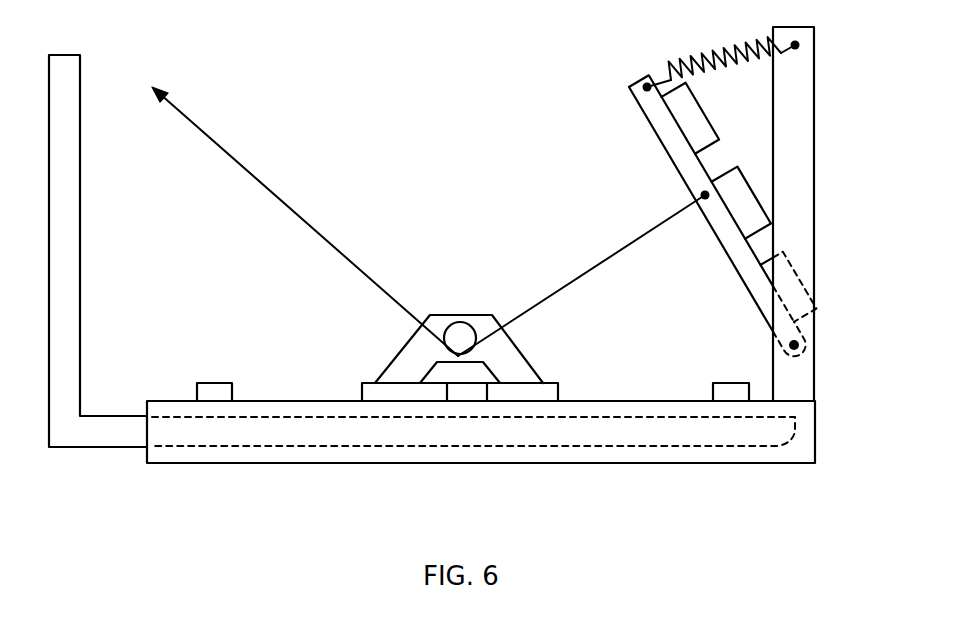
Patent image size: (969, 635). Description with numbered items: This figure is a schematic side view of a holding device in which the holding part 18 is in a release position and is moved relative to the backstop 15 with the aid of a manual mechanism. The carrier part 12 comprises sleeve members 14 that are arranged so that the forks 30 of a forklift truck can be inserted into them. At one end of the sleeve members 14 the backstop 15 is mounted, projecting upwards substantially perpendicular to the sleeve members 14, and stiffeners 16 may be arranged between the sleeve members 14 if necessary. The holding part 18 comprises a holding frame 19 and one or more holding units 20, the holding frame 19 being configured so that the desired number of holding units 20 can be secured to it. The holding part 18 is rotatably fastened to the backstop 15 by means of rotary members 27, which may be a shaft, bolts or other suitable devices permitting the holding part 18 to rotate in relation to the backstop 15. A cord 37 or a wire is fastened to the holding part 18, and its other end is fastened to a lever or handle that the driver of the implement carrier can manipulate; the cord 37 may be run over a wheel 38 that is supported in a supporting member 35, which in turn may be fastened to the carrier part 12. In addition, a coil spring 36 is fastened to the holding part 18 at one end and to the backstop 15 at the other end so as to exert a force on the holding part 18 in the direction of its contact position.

The carrier part 12 is at (479, 264).
The sleeve members 14 is at (782, 464).
The backstop 15 is at (815, 46).
The stiffeners 16 is at (214, 382).
The holding part 18 is at (728, 206).
The holding frame 19 is at (628, 86).
The holding units 20 is at (710, 116).
The rotary members 27 is at (801, 338).
The forks 30 is at (102, 448).
The supporting member 35 is at (533, 298).
The coil spring 36 is at (725, 56).
The cord 37 is at (218, 142).
The wheel 38 is at (459, 322).